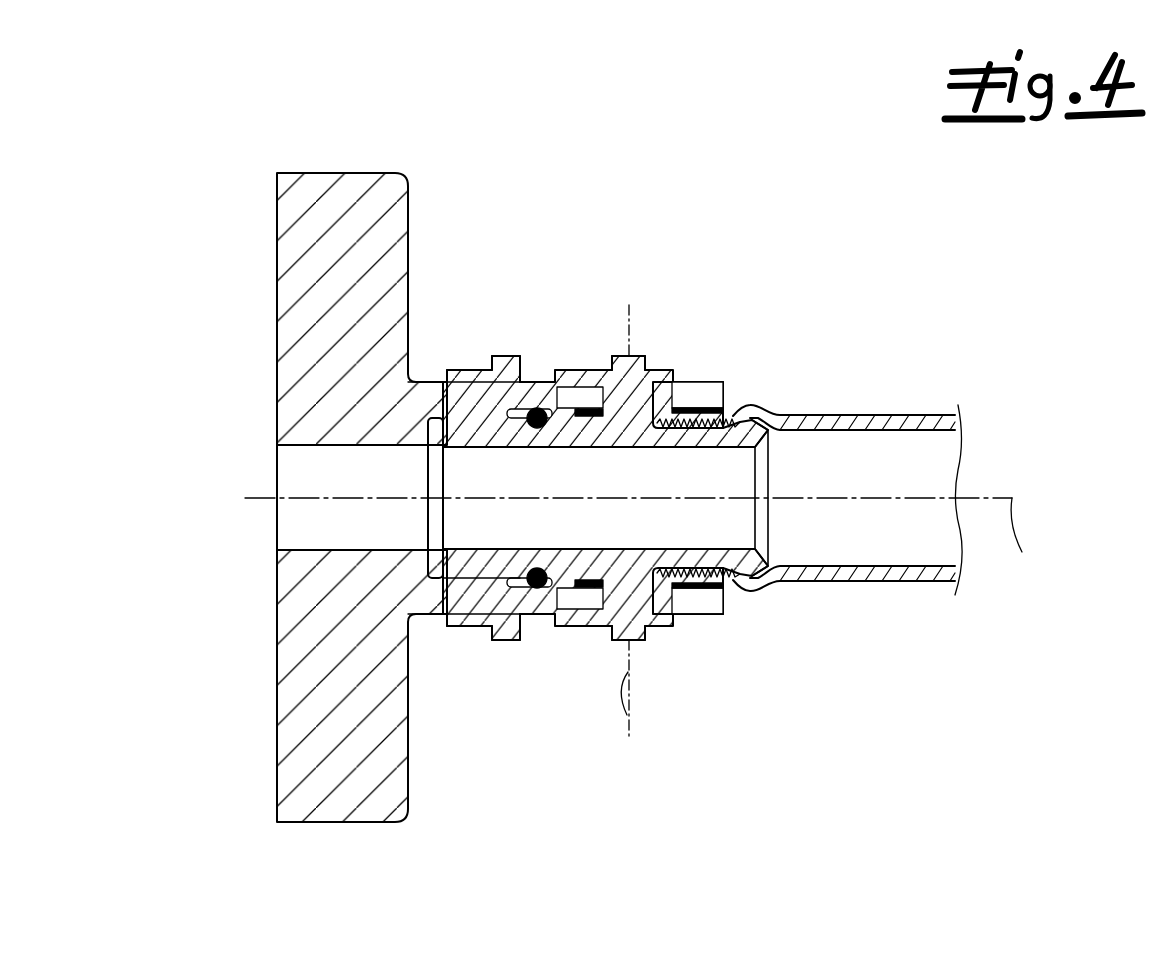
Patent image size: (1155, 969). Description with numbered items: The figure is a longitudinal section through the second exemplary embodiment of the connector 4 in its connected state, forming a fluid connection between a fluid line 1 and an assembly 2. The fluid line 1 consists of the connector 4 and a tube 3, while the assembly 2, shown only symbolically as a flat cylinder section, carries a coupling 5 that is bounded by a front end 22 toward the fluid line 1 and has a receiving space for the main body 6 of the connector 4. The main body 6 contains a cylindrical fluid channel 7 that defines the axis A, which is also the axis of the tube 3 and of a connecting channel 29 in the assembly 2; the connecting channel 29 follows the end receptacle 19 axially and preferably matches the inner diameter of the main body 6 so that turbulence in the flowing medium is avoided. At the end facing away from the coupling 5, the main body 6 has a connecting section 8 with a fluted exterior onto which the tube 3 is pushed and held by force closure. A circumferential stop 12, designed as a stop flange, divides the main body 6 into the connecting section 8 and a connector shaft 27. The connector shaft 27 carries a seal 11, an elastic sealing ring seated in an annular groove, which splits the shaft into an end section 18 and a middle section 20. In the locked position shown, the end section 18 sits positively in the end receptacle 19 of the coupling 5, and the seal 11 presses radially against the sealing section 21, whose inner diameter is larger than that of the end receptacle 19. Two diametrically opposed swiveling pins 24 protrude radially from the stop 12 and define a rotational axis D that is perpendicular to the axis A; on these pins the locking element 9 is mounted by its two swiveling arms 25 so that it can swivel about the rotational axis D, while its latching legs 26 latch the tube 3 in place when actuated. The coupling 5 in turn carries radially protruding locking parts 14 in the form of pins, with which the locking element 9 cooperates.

The fluid line 1 is at (549, 510).
The assembly 2 is at (222, 172).
The tube 3 is at (898, 413).
The connector 4 is at (746, 357).
The coupling 5 is at (480, 653).
The main body 6 is at (477, 412).
The fluid channel 7 is at (747, 522).
The connecting section 8 is at (745, 410).
The locking element 9 is at (589, 663).
The seal 11 is at (538, 408).
The stop 12 is at (652, 378).
The locking part 14 is at (502, 356).
The end section 18 is at (450, 435).
The end receptacle 19 is at (427, 432).
The middle section 20 is at (583, 395).
The sealing section 21 is at (565, 412).
The front end 22 is at (600, 604).
The swiveling pin 24 is at (637, 357).
The swiveling arm 25 is at (566, 635).
The latching leg 26 is at (727, 618).
The connector shaft 27 is at (473, 577).
The connecting channel 29 is at (283, 525).
The rotational axis D is at (625, 725).
The axis A is at (649, 535).